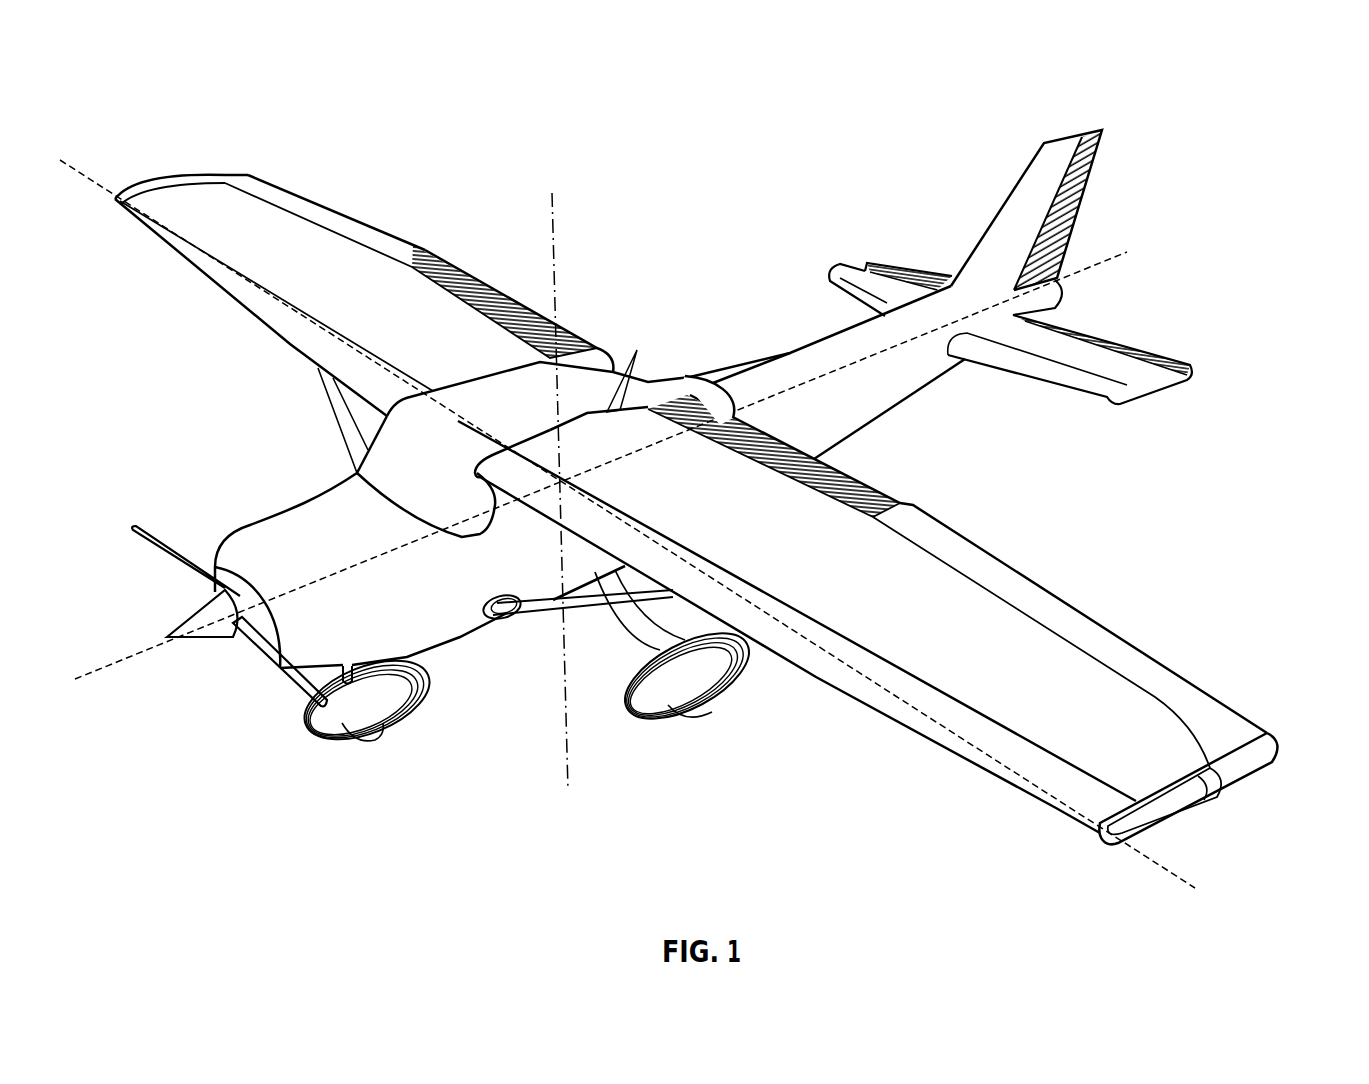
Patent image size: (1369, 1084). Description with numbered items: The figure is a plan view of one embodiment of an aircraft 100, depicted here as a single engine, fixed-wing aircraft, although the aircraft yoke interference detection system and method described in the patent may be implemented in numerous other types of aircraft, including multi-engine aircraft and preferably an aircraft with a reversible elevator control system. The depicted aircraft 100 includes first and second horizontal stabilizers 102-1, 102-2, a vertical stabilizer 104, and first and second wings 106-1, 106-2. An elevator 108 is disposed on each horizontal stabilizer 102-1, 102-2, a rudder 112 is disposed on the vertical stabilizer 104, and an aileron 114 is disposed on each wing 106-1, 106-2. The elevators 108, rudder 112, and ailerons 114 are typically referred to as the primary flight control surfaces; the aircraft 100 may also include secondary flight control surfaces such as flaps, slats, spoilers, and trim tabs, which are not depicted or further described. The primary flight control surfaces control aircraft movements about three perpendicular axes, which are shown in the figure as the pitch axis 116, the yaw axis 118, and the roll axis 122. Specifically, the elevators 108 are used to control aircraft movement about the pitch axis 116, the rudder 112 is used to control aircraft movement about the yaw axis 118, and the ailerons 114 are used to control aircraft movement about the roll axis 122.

The aircraft 100 is at (701, 486).
The first horizontal stabilizer 102-1 is at (845, 273).
The second horizontal stabilizer 102-2 is at (1130, 393).
The vertical stabilizer 104 is at (1065, 222).
The first wing 106-1 is at (253, 227).
The second wing 106-2 is at (1237, 773).
The elevator 108 is at (913, 267).
The rudder 112 is at (1080, 182).
The aileron 114 is at (368, 232).
The pitch axis 116 is at (1152, 862).
The yaw axis 118 is at (552, 205).
The roll axis 122 is at (128, 653).